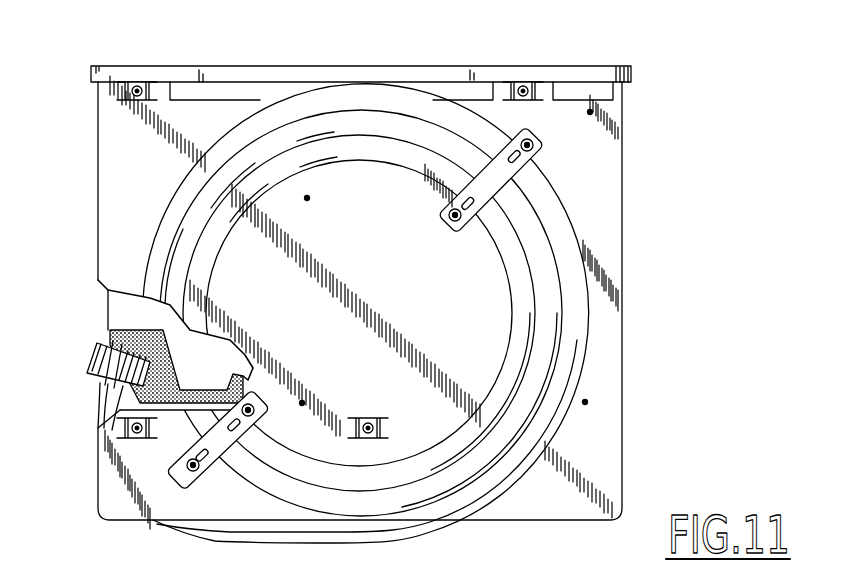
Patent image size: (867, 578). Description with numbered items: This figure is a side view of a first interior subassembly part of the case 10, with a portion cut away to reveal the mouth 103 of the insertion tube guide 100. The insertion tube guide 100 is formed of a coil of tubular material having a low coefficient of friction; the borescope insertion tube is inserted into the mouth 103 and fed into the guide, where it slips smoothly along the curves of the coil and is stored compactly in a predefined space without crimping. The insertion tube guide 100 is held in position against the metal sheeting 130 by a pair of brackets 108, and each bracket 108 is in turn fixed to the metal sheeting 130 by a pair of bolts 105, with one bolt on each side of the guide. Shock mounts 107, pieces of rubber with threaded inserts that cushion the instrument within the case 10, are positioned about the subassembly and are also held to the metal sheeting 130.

The case 10 is at (98, 496).
The insertion tube guide 100 is at (466, 498).
The mouth 103 is at (100, 357).
The bolt 105 is at (534, 140).
The shock mount 107 is at (137, 82).
The bracket 108 is at (505, 165).
The metal sheeting 130 is at (590, 455).